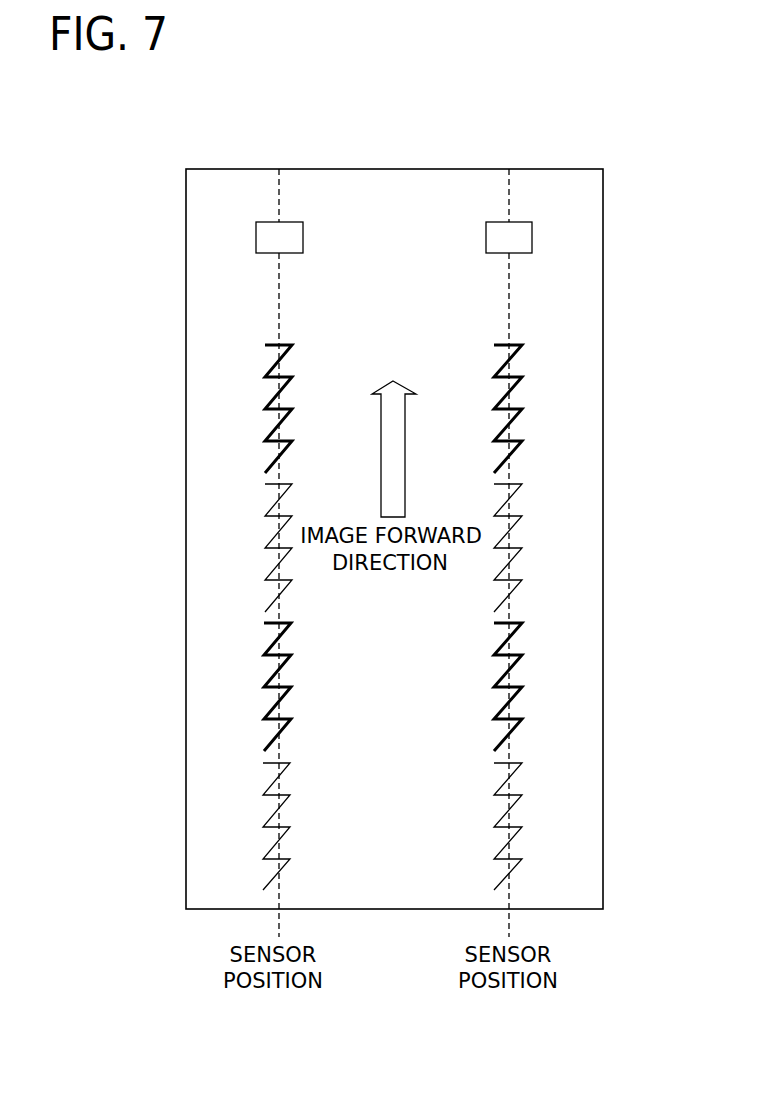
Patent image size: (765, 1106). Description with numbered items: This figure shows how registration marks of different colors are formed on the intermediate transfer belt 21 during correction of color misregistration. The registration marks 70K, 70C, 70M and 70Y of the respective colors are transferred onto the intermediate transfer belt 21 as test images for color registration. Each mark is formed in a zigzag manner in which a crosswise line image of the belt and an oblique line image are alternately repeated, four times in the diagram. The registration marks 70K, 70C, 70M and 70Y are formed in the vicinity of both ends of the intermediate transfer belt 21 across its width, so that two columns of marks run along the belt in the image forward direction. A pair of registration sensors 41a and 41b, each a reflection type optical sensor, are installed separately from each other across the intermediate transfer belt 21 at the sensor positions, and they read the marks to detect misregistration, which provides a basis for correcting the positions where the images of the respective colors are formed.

The intermediate transfer belt 21 is at (603, 208).
The registration sensor 41a is at (287, 222).
The registration sensor 41b is at (517, 222).
The registration mark 70K is at (265, 345).
The registration mark 70C is at (265, 484).
The registration mark 70M is at (264, 623).
The registration mark 70Y is at (263, 763).